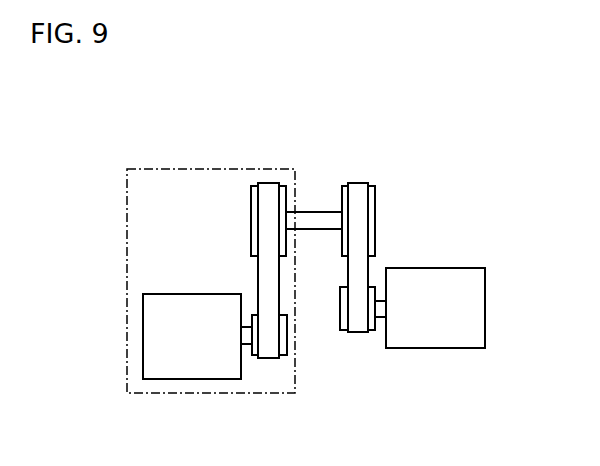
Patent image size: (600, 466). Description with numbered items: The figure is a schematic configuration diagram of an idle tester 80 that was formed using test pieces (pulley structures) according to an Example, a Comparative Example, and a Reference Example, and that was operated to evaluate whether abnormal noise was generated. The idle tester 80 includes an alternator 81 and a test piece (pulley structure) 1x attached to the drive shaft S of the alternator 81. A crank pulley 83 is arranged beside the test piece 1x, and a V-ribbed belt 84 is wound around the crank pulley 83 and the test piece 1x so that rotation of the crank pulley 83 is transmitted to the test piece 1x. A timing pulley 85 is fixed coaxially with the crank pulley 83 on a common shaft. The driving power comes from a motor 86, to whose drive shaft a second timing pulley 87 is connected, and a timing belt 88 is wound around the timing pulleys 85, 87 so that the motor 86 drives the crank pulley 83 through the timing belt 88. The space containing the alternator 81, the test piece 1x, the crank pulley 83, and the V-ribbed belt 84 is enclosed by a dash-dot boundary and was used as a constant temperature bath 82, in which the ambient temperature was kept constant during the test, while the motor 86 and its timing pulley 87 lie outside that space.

The idle tester 80 is at (146, 135).
The alternator 81 is at (175, 368).
The constant temperature bath 82 is at (253, 168).
The crank pulley 83 is at (252, 203).
The V-ribbed belt 84 is at (268, 275).
The timing pulley 85 is at (375, 202).
The motor 86 is at (437, 340).
The timing pulley 87 is at (342, 332).
The timing belt 88 is at (360, 266).
The drive shaft S is at (243, 346).
The test piece (pulley structure) 1x is at (284, 352).